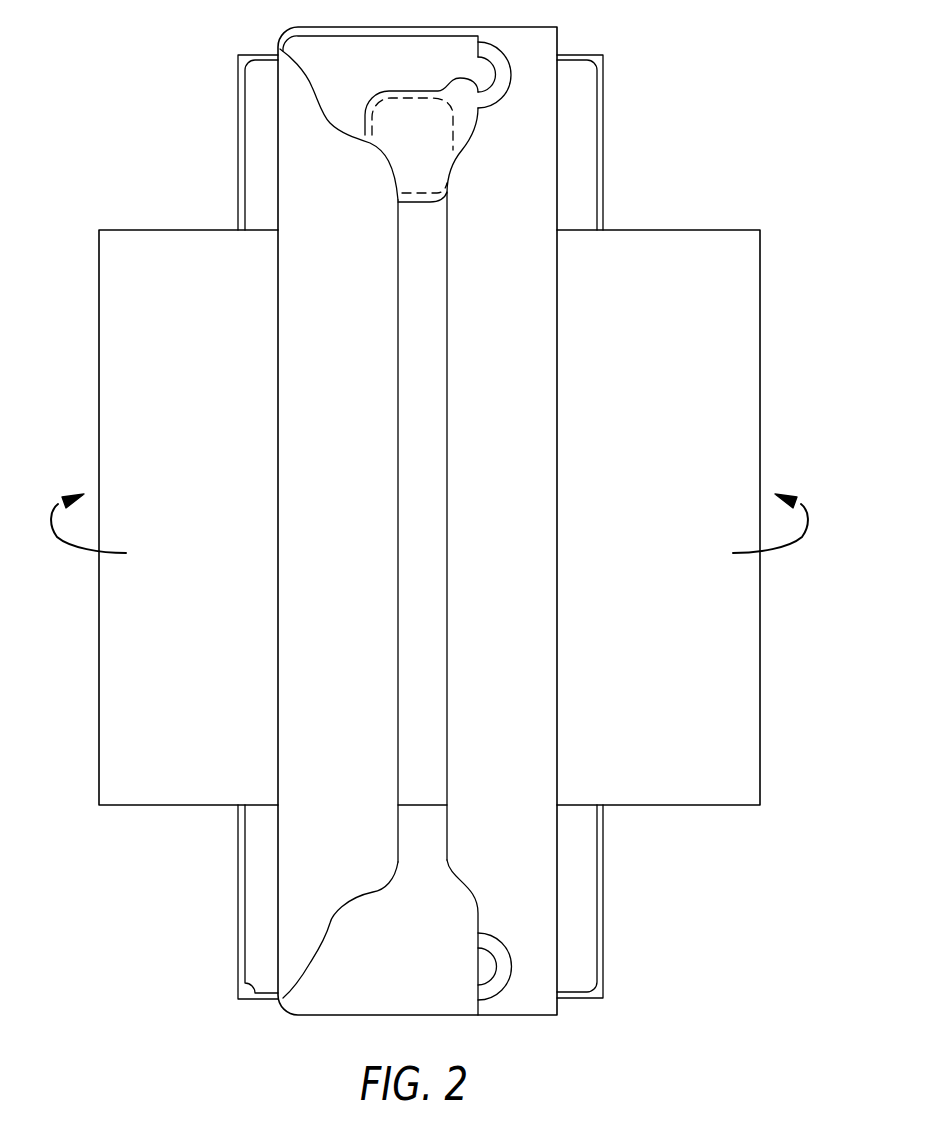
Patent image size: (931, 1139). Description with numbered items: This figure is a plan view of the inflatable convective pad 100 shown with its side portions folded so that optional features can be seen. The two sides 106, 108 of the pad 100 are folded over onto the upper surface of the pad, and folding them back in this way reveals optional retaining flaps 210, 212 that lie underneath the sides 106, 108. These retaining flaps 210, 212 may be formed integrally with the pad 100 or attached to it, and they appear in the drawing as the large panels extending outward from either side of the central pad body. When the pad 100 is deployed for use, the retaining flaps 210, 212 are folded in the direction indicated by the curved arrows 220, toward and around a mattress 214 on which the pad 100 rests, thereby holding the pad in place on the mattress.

The inflatable convective pad 100 is at (668, 190).
The side 106 is at (397, 835).
The side 108 is at (445, 827).
The retaining flap 210 is at (128, 792).
The retaining flap 212 is at (663, 792).
The mattress 214 is at (592, 60).
The arrows 220 is at (77, 548).